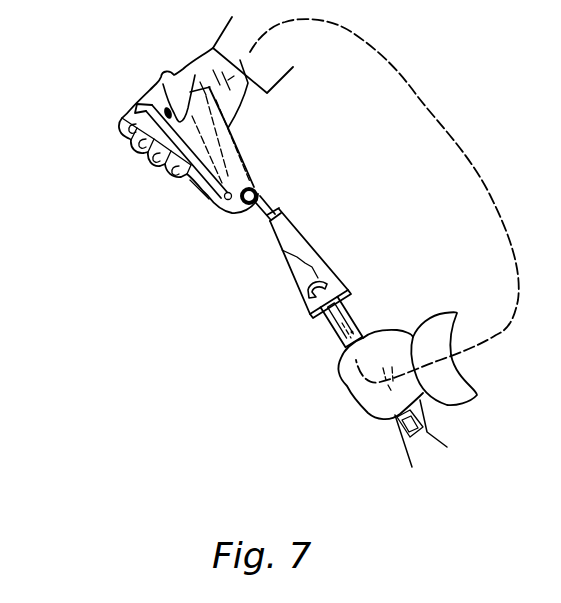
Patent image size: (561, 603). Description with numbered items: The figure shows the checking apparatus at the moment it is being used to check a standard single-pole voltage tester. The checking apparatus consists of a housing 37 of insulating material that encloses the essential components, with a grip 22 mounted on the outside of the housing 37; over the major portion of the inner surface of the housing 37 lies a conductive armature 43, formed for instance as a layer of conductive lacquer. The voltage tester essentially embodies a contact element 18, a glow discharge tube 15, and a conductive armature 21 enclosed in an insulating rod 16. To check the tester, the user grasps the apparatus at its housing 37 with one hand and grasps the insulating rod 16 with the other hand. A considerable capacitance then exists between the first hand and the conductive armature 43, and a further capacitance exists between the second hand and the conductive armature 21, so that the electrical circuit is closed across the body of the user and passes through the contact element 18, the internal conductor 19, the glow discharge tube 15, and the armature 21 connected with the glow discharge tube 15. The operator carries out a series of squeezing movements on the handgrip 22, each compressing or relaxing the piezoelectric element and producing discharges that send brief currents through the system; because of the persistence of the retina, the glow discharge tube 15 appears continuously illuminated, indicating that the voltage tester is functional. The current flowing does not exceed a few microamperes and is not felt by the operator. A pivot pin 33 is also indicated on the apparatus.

The glow discharge tube 15 is at (310, 300).
The insulating rod 16 is at (300, 371).
The contact element 18 is at (262, 196).
The internal conductor 19 is at (287, 239).
The conductive armature 21 is at (302, 370).
The grip 22 is at (140, 113).
The pivot pin 33 is at (243, 208).
The housing 37 is at (228, 128).
The conductive armature 43 is at (245, 155).